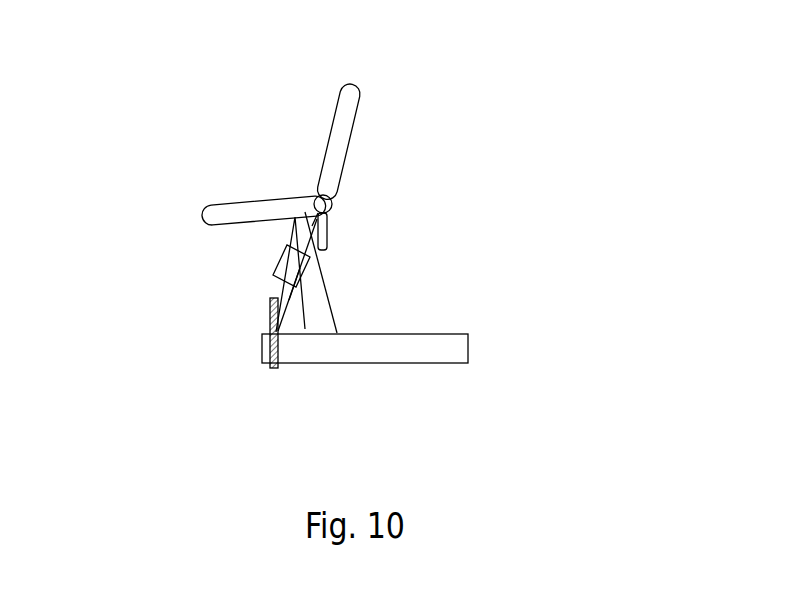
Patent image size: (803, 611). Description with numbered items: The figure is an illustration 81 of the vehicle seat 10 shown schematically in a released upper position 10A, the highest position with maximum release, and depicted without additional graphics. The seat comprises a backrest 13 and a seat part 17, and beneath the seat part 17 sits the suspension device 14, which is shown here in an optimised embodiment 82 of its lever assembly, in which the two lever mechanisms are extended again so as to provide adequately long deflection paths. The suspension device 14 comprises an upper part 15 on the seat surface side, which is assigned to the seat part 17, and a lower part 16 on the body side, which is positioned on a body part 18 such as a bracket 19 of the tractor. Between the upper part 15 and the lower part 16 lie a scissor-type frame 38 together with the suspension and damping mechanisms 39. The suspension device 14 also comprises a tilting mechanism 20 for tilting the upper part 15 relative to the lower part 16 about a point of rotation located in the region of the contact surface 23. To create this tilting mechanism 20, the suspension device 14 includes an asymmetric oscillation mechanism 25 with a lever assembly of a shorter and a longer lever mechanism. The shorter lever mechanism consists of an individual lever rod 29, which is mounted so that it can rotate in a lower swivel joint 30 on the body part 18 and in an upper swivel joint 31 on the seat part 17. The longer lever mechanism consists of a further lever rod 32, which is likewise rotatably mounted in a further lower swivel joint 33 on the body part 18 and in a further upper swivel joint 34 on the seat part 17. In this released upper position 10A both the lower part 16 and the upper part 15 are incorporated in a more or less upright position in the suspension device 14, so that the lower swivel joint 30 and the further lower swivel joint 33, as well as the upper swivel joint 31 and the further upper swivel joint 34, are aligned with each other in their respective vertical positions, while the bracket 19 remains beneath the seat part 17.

The vehicle seat 10 is at (522, 77).
The upper position 10A is at (208, 163).
The backrest 13 is at (352, 117).
The suspension device 14 is at (215, 262).
The upper part 15 is at (333, 225).
The lower part 16 is at (270, 315).
The seat part 17 is at (203, 218).
The body part 18 is at (333, 308).
The bracket 19 is at (457, 353).
The tilting mechanism 20 is at (350, 265).
The contact surface 23 is at (285, 274).
The asymmetric oscillation mechanism 25 is at (319, 310).
The lever rod 29 is at (275, 263).
The lower swivel joint 30 is at (270, 303).
The upper swivel joint 31 is at (340, 210).
The further lever rod 32 is at (330, 285).
The further lower swivel joint 33 is at (278, 322).
The further upper swivel joint 34 is at (340, 245).
The scissor-type frame 38 is at (293, 320).
The damping mechanisms 39 is at (342, 323).
The illustration 81 is at (128, 413).
The optimised embodiment 82 is at (593, 207).